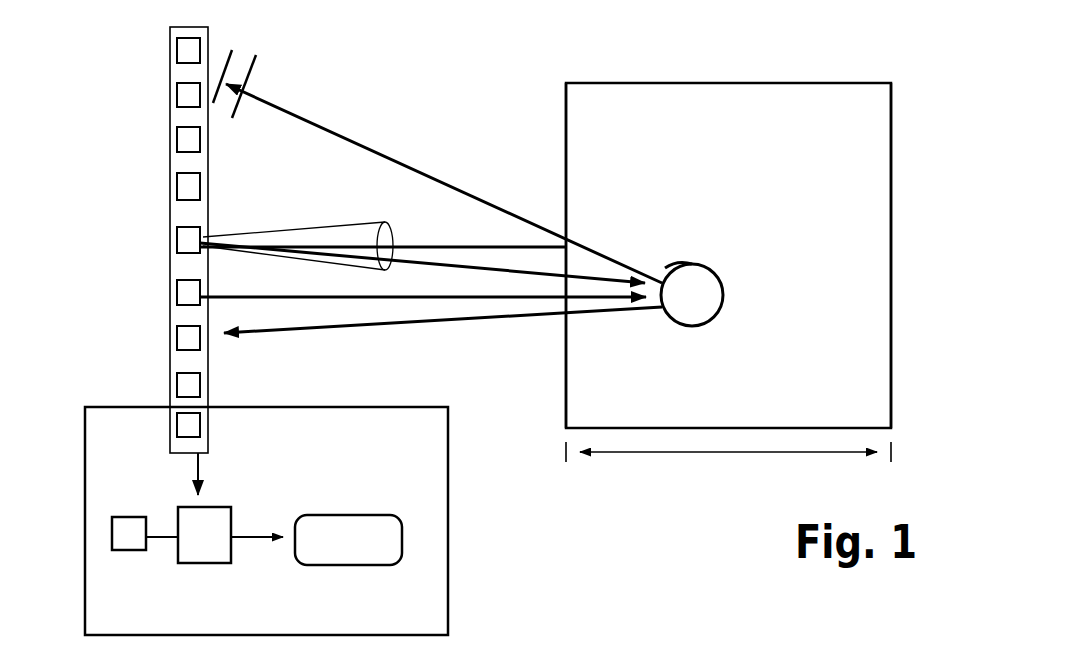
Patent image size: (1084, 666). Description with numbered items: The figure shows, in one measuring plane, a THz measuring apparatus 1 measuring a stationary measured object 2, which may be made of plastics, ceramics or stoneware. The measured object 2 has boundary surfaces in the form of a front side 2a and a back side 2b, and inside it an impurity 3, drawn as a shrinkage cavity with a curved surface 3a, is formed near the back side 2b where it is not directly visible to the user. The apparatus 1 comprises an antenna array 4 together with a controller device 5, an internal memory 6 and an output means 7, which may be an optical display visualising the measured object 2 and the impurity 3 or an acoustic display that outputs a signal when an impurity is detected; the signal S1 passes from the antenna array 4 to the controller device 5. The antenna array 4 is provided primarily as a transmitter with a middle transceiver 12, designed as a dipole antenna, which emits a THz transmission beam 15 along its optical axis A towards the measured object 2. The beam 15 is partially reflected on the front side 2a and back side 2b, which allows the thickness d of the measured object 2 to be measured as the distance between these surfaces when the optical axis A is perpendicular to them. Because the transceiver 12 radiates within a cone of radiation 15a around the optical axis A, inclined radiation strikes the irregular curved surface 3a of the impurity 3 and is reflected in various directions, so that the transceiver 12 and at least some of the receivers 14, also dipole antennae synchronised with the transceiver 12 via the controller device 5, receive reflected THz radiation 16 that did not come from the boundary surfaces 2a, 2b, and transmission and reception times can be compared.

The THz measuring apparatus 1 is at (448, 634).
The measured object 2 is at (745, 103).
The front side 2a is at (565, 113).
The back side 2b is at (893, 127).
The impurity 3 is at (718, 292).
The curved surface of the shrinkage cavity 3a is at (668, 268).
The antenna array 4 is at (178, 33).
The controller device 5 is at (222, 517).
The internal memory 6 is at (130, 543).
The output means 7 is at (370, 555).
The transceiver 12 is at (178, 240).
The receivers 14 is at (178, 135).
The THz transmission beam 15 is at (494, 247).
The cone of radiation 15a is at (353, 233).
The reflected THz radiation 16 is at (333, 133).
The optical axis A is at (407, 246).
The sensor signal S1 is at (198, 483).
The thickness d is at (728, 473).